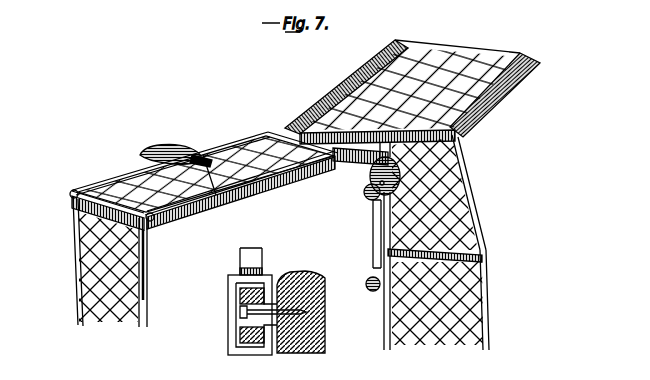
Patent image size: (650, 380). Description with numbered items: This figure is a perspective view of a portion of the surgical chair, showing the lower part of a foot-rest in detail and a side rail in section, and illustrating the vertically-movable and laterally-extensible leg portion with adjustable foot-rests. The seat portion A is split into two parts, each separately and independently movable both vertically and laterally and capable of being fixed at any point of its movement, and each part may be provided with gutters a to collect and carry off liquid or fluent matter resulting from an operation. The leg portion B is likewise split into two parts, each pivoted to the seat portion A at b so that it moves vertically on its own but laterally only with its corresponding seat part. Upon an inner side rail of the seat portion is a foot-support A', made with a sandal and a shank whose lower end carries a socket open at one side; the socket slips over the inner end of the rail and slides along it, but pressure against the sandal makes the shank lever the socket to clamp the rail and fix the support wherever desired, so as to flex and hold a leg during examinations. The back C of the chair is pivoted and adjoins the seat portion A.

The gutters a is at (128, 181).
The pivot of leg portion to seat portion b is at (72, 198).
The seat portion A is at (233, 174).
The foot-support A' is at (270, 171).
The leg portion B is at (295, 241).
The back C is at (411, 88).